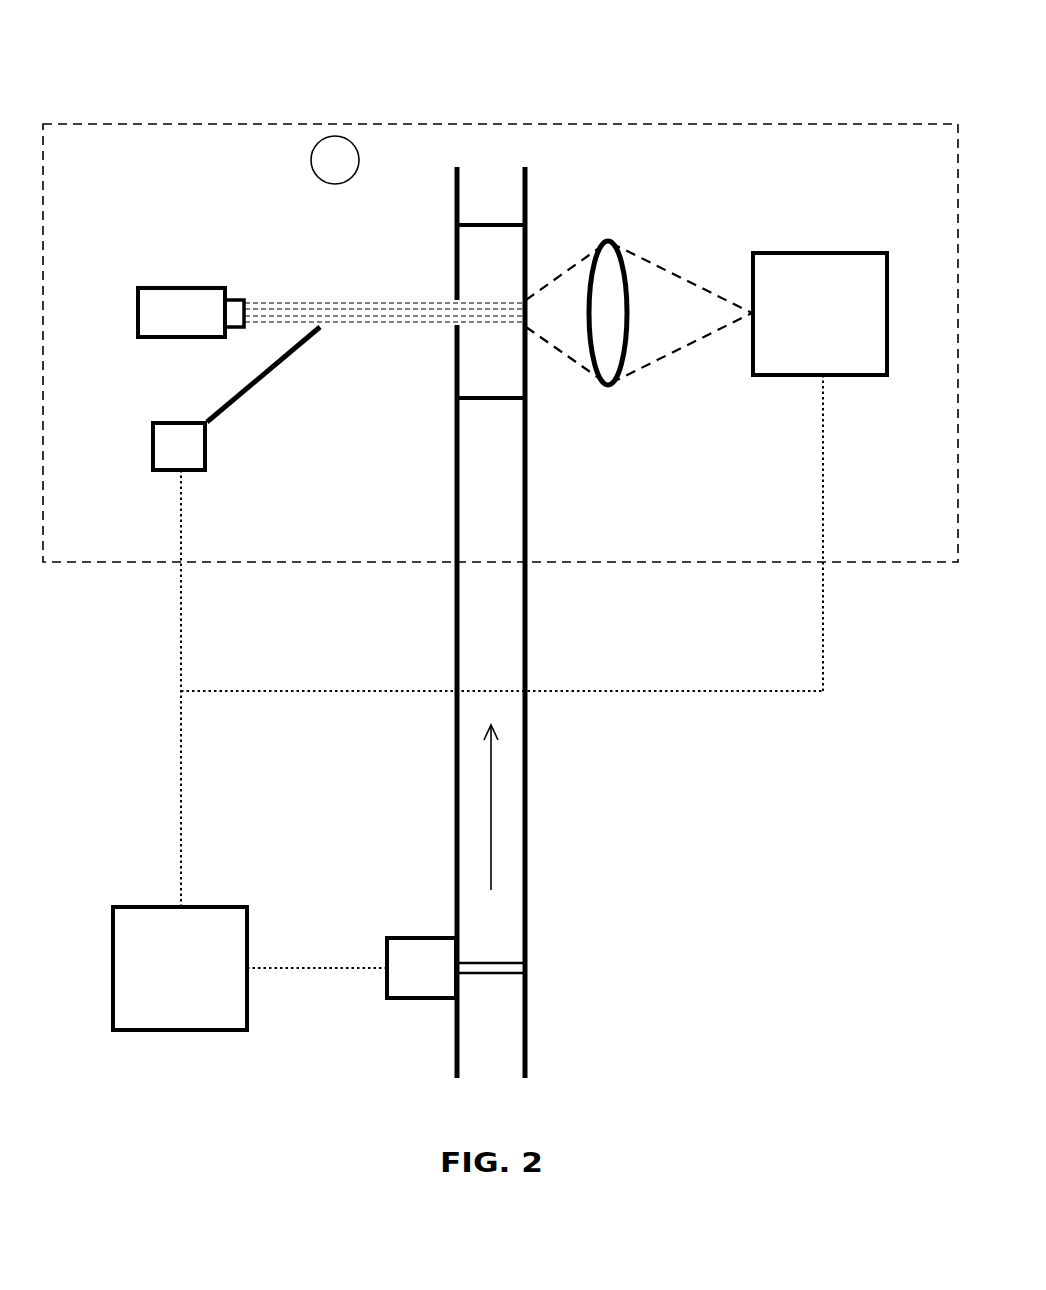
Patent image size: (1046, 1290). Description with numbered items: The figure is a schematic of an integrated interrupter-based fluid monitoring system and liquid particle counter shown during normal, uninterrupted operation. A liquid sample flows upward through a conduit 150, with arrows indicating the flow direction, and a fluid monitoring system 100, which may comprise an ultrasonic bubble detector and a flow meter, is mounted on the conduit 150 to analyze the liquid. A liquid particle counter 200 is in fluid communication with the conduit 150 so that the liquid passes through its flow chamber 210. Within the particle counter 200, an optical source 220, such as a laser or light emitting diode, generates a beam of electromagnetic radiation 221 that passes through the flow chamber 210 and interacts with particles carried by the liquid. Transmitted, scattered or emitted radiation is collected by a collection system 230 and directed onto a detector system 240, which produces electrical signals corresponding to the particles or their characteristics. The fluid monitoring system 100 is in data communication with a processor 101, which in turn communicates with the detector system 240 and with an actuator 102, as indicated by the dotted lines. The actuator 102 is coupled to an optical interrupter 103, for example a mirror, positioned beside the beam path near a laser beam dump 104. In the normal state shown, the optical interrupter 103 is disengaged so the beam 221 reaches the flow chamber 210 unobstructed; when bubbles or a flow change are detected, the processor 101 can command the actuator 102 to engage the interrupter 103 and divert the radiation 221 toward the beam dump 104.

The liquid particle counter 200 is at (173, 145).
The laser beam dump 104 is at (328, 160).
The conduit 150 is at (525, 791).
The flow chamber 210 is at (467, 357).
The optical source 220 is at (195, 313).
The beam of electromagnetic radiation 221 is at (295, 310).
The optical interrupter 103 is at (218, 408).
The actuator 102 is at (205, 470).
The collection system 230 is at (612, 375).
The detector system 240 is at (817, 275).
The processor 101 is at (131, 938).
The fluid monitoring system 100 is at (415, 955).